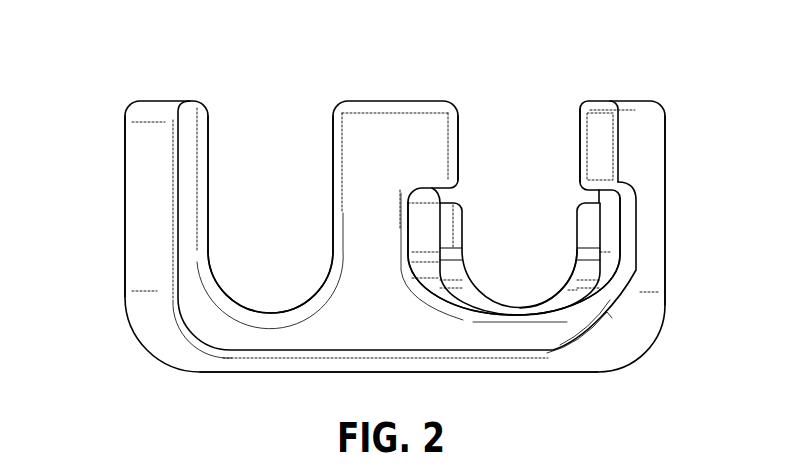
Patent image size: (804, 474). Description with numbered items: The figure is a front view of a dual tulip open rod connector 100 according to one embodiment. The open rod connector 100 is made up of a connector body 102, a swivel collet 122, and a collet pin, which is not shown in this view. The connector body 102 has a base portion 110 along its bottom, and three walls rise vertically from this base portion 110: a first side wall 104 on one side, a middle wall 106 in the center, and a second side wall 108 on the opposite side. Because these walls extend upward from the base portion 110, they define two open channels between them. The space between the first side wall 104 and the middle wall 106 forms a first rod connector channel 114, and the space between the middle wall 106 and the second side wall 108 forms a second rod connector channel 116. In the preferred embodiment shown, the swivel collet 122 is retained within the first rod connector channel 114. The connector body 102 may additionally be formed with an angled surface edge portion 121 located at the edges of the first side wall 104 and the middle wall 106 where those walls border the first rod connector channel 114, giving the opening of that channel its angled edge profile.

The open rod connector 100 is at (556, 66).
The connector body 102 is at (165, 333).
The first side wall 104 is at (646, 213).
The middle wall 106 is at (372, 207).
The second side wall 108 is at (150, 208).
The base portion 110 is at (255, 373).
The first rod connector channel 114 is at (528, 183).
The second rod connector channel 116 is at (272, 180).
The angled surface edge portion 121 is at (610, 260).
The swivel collet 122 is at (553, 300).